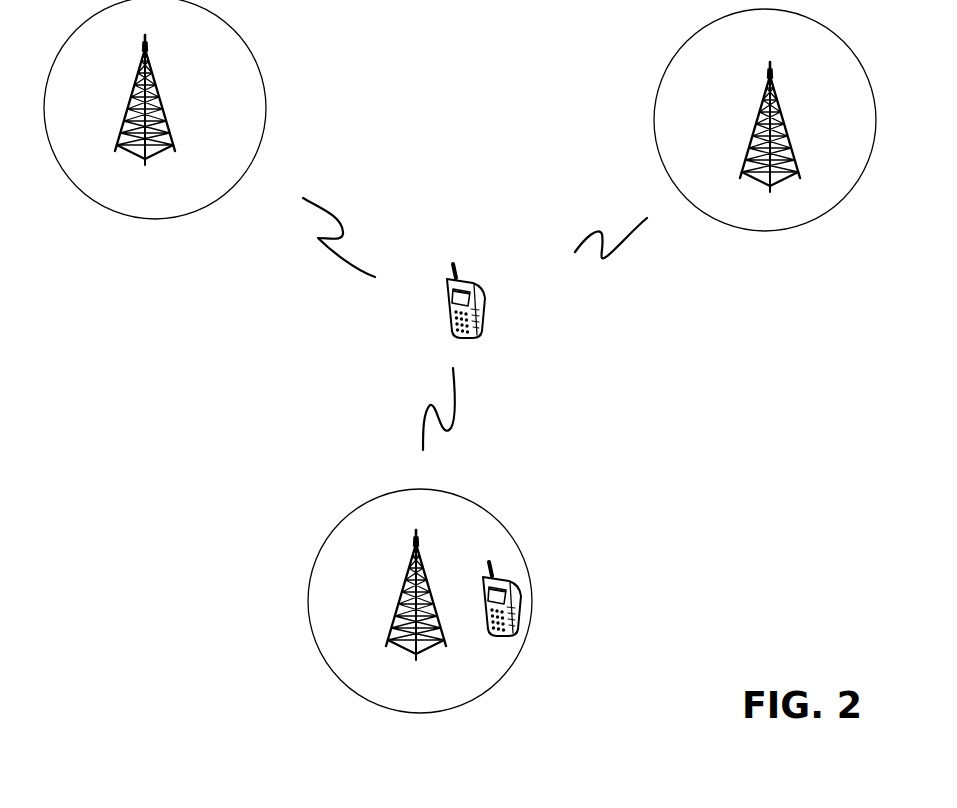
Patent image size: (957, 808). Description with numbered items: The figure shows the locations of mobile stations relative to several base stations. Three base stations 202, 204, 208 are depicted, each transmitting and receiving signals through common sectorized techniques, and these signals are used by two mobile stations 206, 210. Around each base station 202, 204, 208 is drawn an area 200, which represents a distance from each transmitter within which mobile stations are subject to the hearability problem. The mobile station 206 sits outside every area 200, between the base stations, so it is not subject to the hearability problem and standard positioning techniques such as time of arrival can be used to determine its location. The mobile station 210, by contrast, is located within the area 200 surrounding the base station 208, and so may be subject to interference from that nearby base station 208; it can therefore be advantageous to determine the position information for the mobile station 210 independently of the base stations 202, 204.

The area 200 is at (460, 375).
The base station 202 is at (150, 66).
The base station 204 is at (777, 100).
The mobile station 206 is at (482, 283).
The base station 208 is at (430, 568).
The mobile station 210 is at (513, 581).